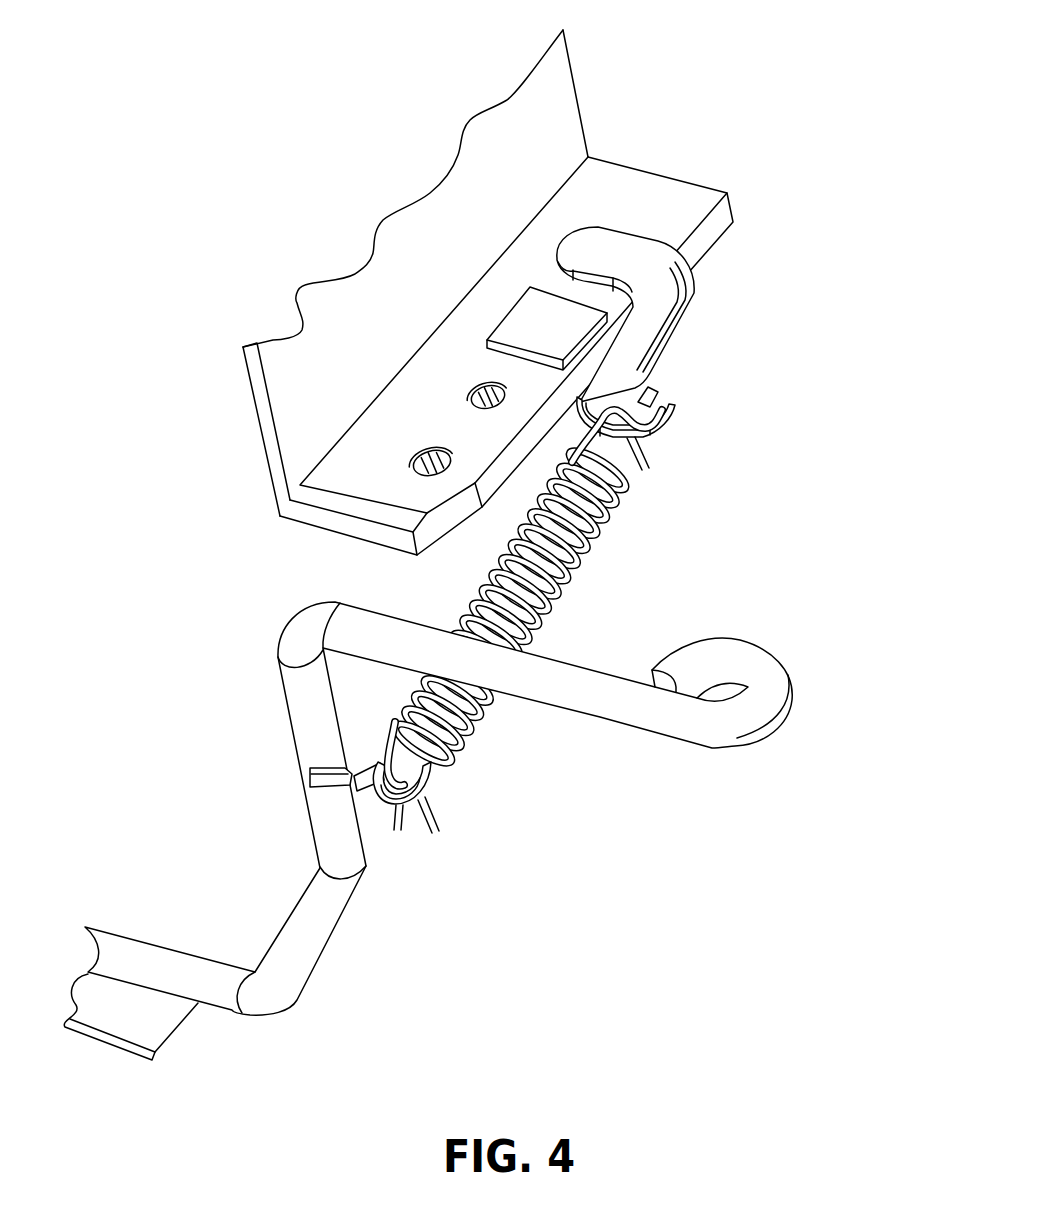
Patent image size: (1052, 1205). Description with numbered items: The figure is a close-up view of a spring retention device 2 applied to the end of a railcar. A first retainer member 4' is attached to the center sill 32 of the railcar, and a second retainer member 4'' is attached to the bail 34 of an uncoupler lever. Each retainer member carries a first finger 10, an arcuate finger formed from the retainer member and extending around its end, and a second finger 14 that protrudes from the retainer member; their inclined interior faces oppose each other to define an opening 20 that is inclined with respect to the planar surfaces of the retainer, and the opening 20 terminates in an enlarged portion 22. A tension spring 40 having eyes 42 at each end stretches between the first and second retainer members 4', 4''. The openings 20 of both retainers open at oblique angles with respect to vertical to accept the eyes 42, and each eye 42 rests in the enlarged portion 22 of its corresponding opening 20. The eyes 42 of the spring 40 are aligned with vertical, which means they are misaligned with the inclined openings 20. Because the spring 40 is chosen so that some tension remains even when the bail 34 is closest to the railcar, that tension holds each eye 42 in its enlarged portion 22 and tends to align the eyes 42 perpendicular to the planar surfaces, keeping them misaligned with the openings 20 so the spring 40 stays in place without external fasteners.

The spring retention device 2 is at (491, 545).
The first retainer member 4' is at (707, 288).
The second retainer member 4'' is at (301, 714).
The first finger 10 is at (668, 422).
The second finger 14 is at (658, 385).
The opening 20 is at (672, 397).
The enlarged portion 22 is at (425, 793).
The center sill 32 is at (645, 188).
The bail 34 is at (303, 947).
The tension spring 40 is at (585, 560).
The eyes 42 is at (640, 466).